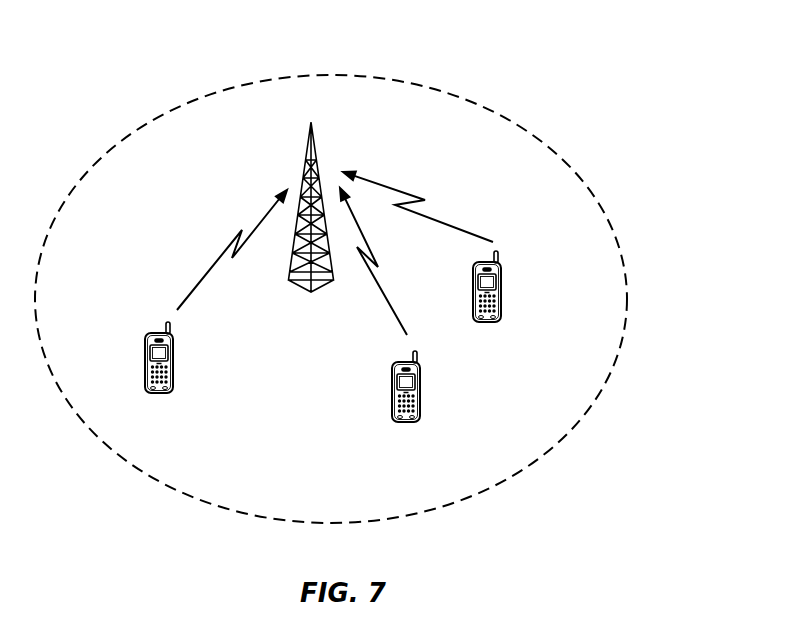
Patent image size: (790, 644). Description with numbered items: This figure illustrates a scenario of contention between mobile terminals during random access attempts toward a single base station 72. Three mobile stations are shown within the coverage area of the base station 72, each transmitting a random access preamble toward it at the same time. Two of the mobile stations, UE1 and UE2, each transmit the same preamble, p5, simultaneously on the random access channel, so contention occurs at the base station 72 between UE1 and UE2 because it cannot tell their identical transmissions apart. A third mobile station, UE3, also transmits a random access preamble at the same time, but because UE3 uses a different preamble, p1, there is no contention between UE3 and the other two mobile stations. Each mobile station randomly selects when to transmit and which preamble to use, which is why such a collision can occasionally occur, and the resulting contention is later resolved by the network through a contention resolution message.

The base station 72 is at (311, 292).
The mobile station UE1 is at (402, 404).
The mobile station UE2 is at (487, 304).
The mobile station UE3 is at (159, 375).
The random access preamble p1 is at (232, 250).
The random access preamble p5 is at (416, 253).